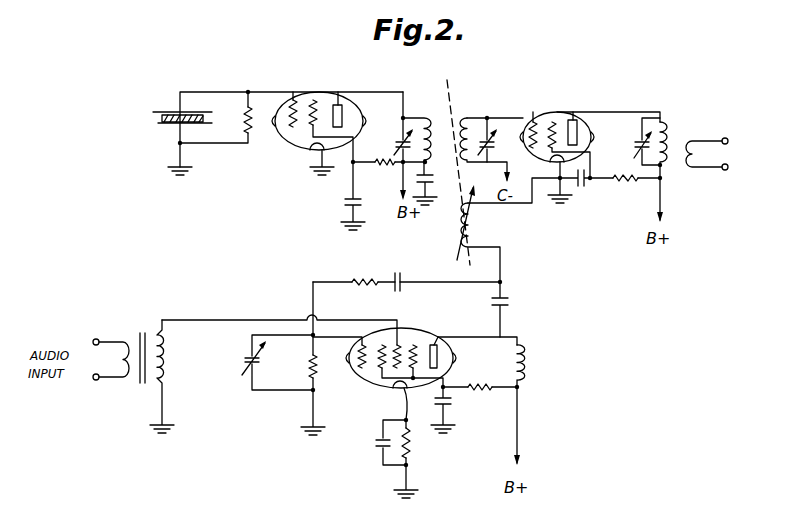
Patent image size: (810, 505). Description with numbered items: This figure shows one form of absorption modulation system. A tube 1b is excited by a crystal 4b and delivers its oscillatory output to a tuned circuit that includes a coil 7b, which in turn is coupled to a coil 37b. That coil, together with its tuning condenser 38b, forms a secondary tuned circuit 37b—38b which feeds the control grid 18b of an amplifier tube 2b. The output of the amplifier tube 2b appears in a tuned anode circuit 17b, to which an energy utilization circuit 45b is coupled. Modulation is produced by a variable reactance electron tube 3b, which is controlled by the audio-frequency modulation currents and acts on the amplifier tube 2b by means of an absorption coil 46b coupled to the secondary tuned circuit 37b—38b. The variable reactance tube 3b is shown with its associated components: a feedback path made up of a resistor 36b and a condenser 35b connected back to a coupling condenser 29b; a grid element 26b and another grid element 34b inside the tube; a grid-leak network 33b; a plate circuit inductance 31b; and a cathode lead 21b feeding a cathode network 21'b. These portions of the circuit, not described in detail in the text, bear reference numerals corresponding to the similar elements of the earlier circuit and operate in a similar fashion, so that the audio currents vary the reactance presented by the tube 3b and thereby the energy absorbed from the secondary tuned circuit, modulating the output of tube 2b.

The tube 1b is at (306, 91).
The crystal 4b is at (157, 118).
The coil 7b is at (426, 118).
The coil 37b is at (468, 125).
The secondary tuned circuit condenser 38b is at (491, 138).
The amplifier tube 2b is at (557, 145).
The control grid 18b is at (535, 133).
The tuned anode circuit 17b is at (668, 128).
The energy utilization circuit 45b is at (700, 151).
The absorption coil 46b is at (458, 226).
The feedback resistor 36b is at (367, 281).
The feedback condenser 35b is at (398, 272).
The coupling condenser 29b is at (508, 301).
The control grid 26b is at (397, 344).
The variable reactance electron tube 3b is at (401, 347).
The screen grid / first grid 34b is at (359, 369).
The grid leak resistor 33b is at (310, 368).
The plate load inductance 31b is at (513, 353).
The cathode lead 21b is at (399, 391).
The cathode bias resistor-condenser network 21'b is at (417, 458).